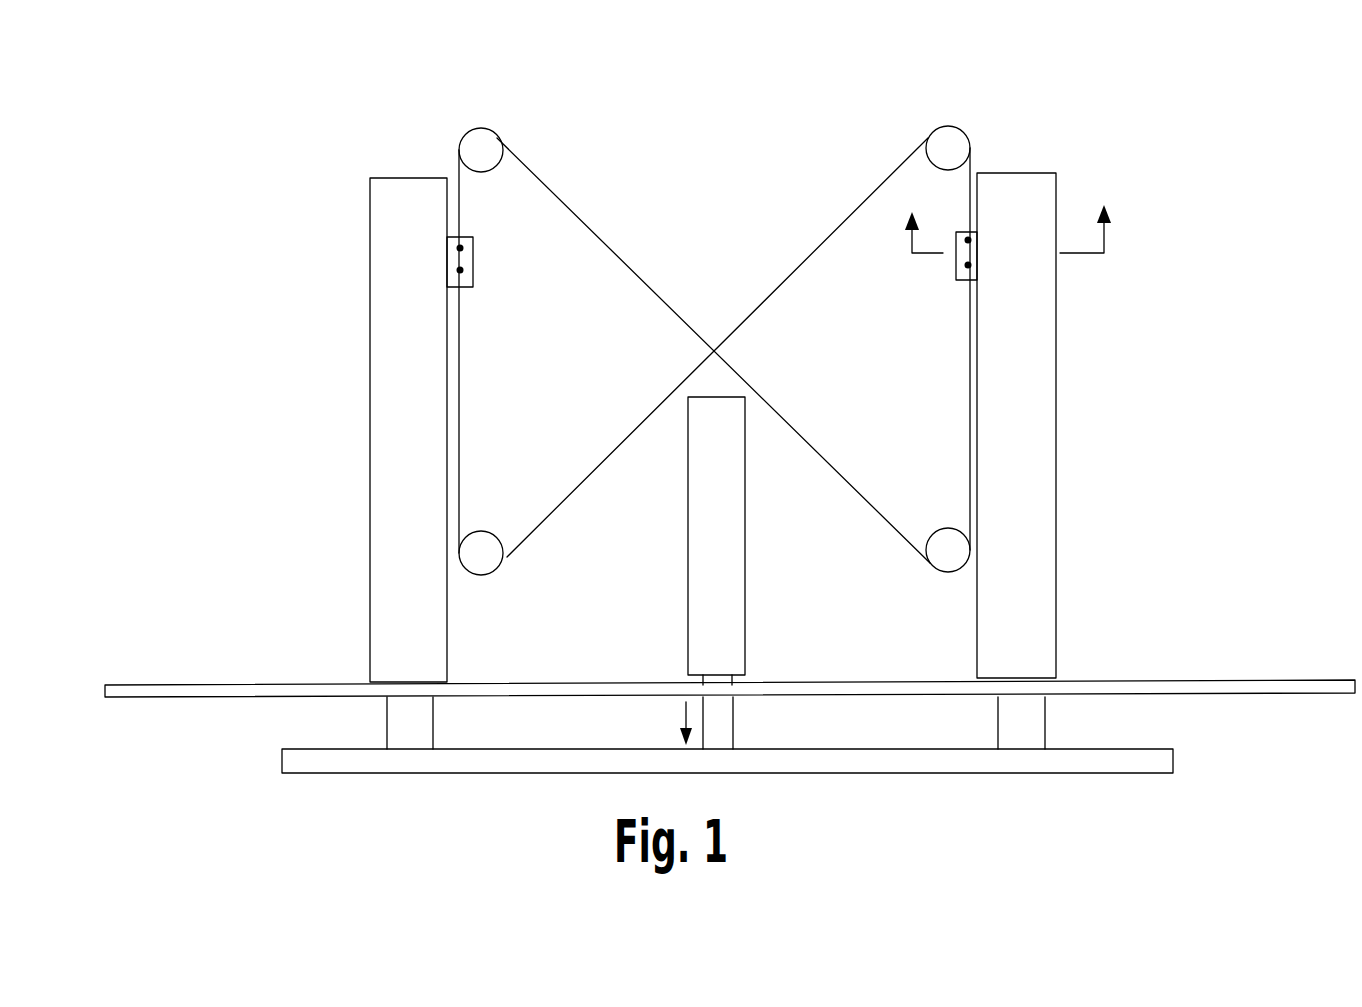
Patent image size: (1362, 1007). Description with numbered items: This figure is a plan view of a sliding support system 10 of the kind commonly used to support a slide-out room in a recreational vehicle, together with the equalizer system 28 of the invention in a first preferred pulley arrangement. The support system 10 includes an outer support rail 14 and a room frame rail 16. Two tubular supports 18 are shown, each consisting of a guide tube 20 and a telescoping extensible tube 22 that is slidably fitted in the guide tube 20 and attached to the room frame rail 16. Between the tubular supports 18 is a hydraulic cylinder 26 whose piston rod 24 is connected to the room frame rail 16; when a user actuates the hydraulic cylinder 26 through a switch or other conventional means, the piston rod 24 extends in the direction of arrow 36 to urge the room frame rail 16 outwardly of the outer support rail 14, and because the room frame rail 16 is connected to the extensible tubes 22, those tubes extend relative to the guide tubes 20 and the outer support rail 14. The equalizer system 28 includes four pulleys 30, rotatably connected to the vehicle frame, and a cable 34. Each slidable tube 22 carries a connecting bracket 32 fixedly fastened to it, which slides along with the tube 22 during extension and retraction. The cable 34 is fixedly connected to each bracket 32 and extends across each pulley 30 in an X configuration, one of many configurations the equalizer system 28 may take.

The sliding support system 10 is at (1157, 170).
The outer support rail 14 is at (870, 688).
The room frame rail 16 is at (893, 763).
The tubular supports 18 is at (717, 427).
The guide tube 20 is at (383, 443).
The telescoping extensible tube 22 is at (403, 720).
The piston rod 24 is at (723, 726).
The hydraulic cylinder 26 is at (730, 572).
The equalizer system 28 is at (484, 120).
The pulleys 30 is at (488, 152).
The connecting bracket 32 is at (472, 258).
The cable 34 is at (600, 235).
The arrow 36 is at (680, 716).